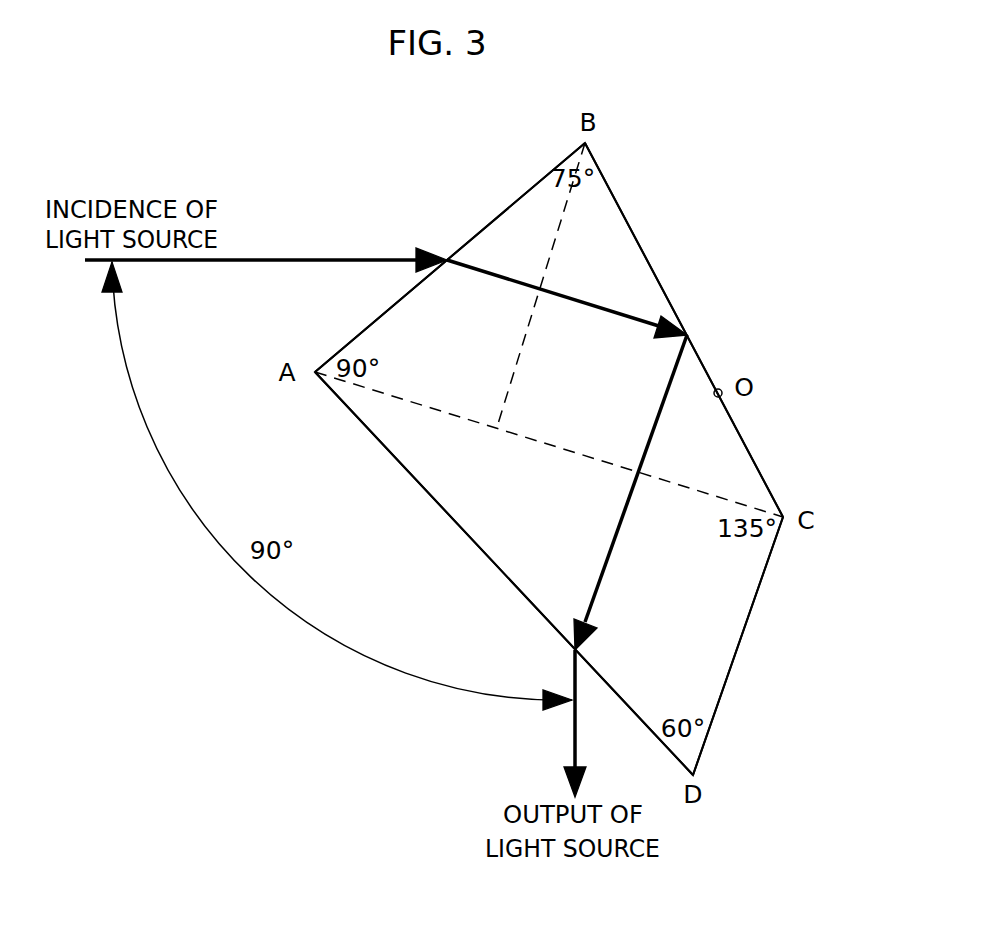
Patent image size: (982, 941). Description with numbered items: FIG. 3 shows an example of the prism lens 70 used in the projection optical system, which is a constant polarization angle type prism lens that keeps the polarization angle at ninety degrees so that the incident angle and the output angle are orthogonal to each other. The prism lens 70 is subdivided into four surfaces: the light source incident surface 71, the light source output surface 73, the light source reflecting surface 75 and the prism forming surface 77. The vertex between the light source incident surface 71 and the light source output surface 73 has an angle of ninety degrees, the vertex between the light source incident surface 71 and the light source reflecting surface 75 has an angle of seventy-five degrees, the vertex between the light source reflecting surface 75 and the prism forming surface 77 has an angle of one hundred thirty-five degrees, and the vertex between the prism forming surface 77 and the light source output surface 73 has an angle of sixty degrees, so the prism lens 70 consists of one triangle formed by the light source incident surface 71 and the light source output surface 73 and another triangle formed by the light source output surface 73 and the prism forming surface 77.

The prism lens 70 is at (742, 251).
The light source incident surface 71 is at (488, 225).
The light source output surface 73 is at (455, 522).
The light source reflecting surface 75 is at (647, 253).
The prism forming surface 77 is at (743, 635).